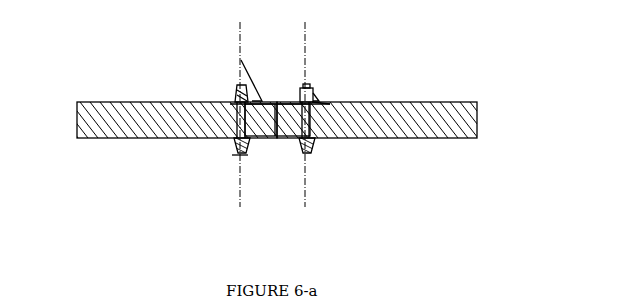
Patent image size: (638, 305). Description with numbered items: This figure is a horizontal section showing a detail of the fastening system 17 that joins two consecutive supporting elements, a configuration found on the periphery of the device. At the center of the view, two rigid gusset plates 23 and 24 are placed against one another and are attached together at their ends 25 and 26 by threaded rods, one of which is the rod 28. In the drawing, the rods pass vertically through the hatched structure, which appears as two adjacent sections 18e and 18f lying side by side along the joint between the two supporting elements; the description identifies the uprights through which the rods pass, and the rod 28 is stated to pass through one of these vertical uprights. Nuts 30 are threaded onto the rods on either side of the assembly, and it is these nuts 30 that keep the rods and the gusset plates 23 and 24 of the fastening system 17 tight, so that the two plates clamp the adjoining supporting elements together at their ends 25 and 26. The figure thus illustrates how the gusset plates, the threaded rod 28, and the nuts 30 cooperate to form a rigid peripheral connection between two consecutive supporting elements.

The fastening system 17 is at (272, 96).
The slab section 18e is at (97, 139).
The slab section 18f is at (450, 139).
The rigid gusset plate 23 is at (238, 156).
The rigid gusset plate 24 is at (240, 52).
The end of the gusset plates 25 is at (232, 146).
The end of the gusset plates 26 is at (318, 150).
The threaded rod 28 is at (342, 100).
The nuts 30 is at (313, 85).